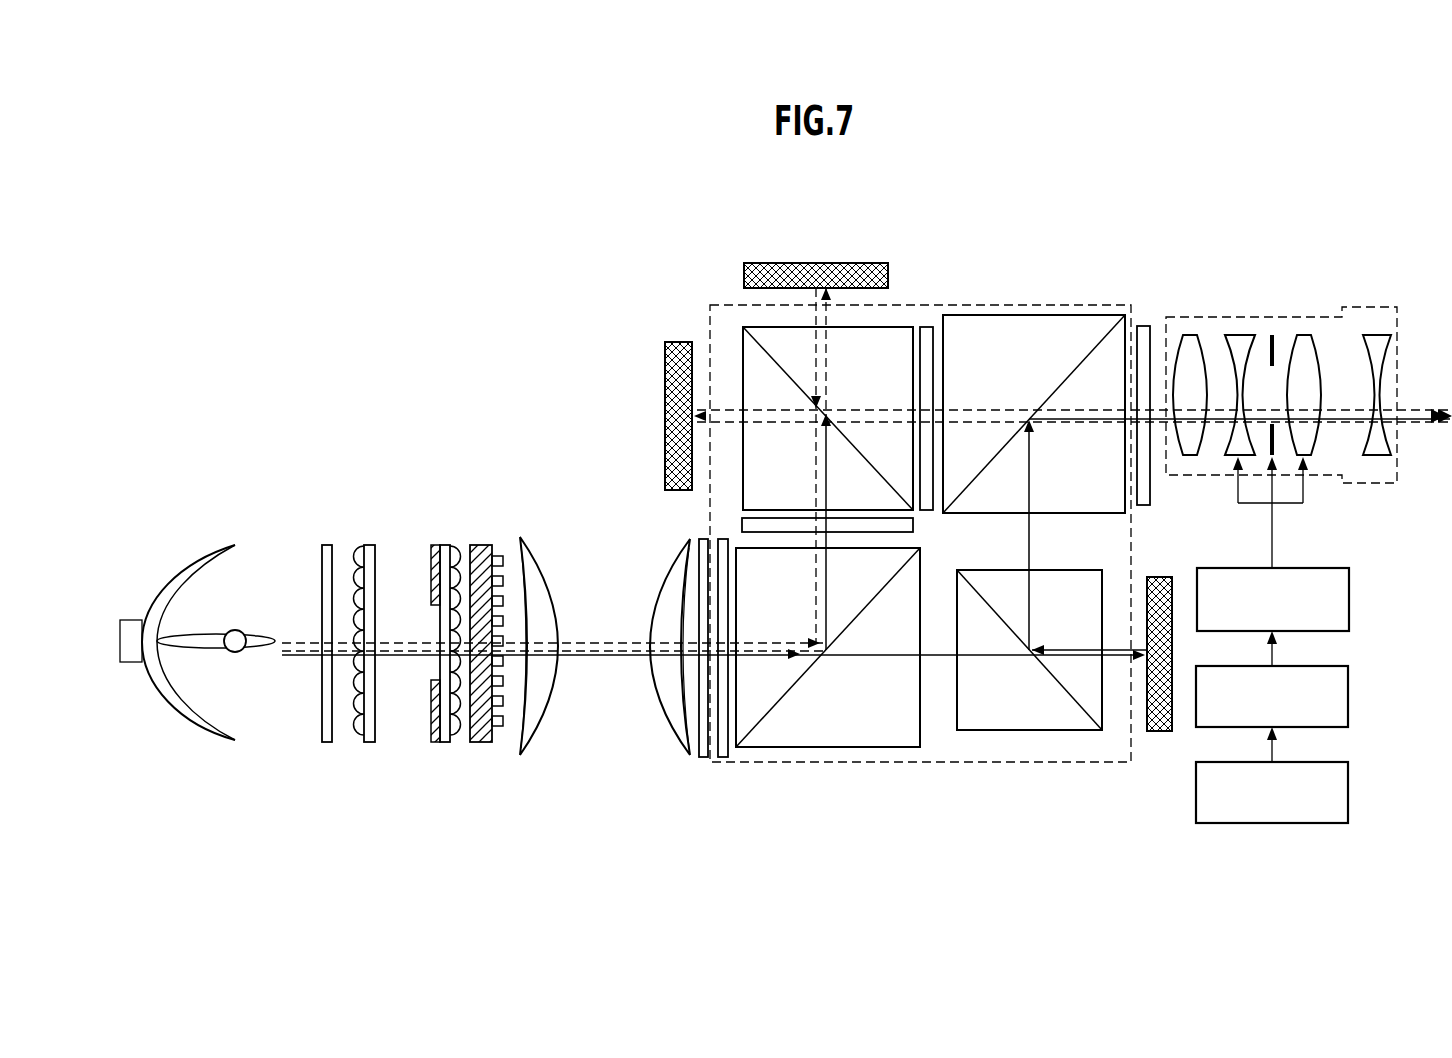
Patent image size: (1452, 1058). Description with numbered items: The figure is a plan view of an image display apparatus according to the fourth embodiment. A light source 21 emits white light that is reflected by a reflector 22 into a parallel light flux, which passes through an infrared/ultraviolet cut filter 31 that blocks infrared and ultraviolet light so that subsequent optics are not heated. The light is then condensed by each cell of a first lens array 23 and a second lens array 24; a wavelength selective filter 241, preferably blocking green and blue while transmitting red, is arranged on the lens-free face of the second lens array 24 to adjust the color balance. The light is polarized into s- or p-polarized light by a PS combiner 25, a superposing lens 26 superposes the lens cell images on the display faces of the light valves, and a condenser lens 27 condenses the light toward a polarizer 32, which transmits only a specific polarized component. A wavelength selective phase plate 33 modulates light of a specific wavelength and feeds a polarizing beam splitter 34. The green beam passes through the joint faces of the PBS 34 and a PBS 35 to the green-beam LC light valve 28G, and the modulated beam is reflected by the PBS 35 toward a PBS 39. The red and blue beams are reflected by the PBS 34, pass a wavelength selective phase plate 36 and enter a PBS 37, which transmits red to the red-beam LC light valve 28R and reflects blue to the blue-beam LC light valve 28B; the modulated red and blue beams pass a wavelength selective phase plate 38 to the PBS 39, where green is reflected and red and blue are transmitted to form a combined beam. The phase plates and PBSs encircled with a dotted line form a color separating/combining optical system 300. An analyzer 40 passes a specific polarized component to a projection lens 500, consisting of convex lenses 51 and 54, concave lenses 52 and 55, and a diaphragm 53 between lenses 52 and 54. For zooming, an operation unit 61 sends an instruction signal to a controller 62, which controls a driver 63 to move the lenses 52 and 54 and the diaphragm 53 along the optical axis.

The light source 21 is at (238, 629).
The reflector 22 is at (222, 543).
The first lens array 23 is at (369, 544).
The second lens array 24 is at (445, 544).
The wavelength selective filter 241 is at (434, 545).
The PS combiner 25 is at (481, 544).
The superposing lens 26 is at (524, 536).
The condenser lens 27 is at (688, 542).
The red-beam LC light valve 28R is at (820, 262).
The green-beam LC light valve 28G is at (1158, 732).
The blue-beam LC light valve 28B is at (664, 366).
The infrared/ultraviolet cut filter 31 is at (326, 544).
The polarizer 32 is at (704, 759).
The wavelength selective phase plate 33 is at (724, 759).
The polarizing beam splitter 34 is at (838, 748).
The polarizing beam splitter 35 is at (1050, 731).
The wavelength selective phase plate 36 is at (913, 525).
The polarizing beam splitter 37 is at (745, 327).
The wavelength selective phase plate 38 is at (927, 326).
The polarizing beam splitter 39 is at (1033, 314).
The analyzer 40 is at (1143, 325).
The convex lens 51 is at (1189, 334).
The concave lens 52 is at (1238, 334).
The diaphragm 53 is at (1272, 334).
The convex lens 54 is at (1305, 334).
The concave lens 55 is at (1377, 334).
The operation unit 61 is at (1349, 790).
The controller 62 is at (1349, 696).
The driver 63 is at (1350, 598).
The color separating/combining optical system 300 is at (952, 763).
The projection lens 500 is at (1342, 483).